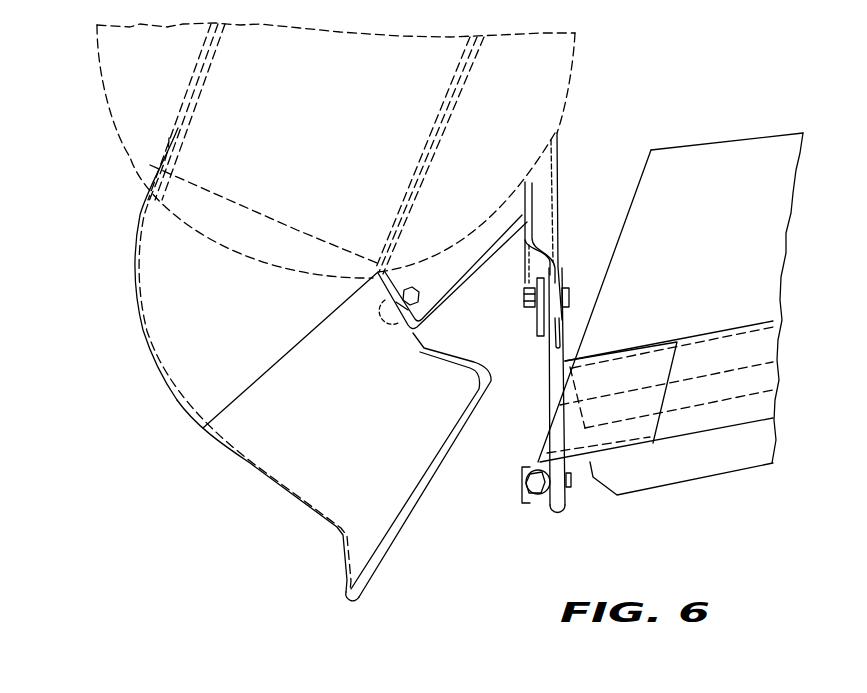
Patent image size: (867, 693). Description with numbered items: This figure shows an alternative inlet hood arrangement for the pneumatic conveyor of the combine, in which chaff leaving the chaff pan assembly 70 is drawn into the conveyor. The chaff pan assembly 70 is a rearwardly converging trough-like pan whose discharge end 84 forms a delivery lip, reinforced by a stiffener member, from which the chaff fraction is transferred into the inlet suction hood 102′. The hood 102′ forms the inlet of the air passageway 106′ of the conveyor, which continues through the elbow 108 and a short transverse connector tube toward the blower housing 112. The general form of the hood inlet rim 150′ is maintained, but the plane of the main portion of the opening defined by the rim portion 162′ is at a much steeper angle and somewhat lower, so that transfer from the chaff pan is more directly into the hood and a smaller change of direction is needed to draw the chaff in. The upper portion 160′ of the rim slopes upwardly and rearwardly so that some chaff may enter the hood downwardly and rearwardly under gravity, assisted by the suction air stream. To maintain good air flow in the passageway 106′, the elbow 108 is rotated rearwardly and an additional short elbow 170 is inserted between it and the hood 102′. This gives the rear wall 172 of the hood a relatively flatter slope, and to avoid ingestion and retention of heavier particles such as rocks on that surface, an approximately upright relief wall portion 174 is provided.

The chaff pan assembly 70 is at (679, 487).
The discharge end 84 is at (512, 470).
The inlet suction hood 102′ is at (225, 541).
The air passageway 106′ is at (362, 422).
The elbow 108 is at (197, 73).
The blower housing 112 is at (130, 158).
The hood inlet rim 150′ is at (400, 560).
The upper portion of the rim 160′ is at (447, 337).
The rim portion 162′ is at (413, 510).
The short elbow 170 is at (133, 268).
The rear wall 172 is at (250, 463).
The relief wall portion 174 is at (345, 571).